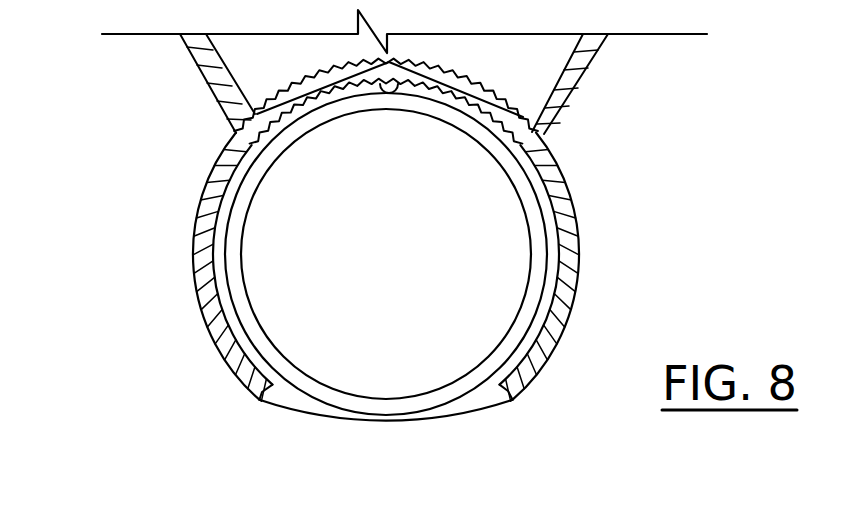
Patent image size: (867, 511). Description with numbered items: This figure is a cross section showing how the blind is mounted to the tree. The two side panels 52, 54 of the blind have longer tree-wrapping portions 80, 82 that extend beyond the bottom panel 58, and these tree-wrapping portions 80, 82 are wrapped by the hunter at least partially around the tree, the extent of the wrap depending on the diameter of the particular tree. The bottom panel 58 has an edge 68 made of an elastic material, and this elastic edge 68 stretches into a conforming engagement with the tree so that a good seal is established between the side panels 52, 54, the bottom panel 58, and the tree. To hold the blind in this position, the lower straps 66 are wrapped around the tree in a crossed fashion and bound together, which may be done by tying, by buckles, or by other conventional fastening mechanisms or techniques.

The side panel 52 is at (195, 60).
The side panel 54 is at (607, 45).
The bottom panel 58 is at (527, 60).
The lower straps 66 is at (231, 154).
The elastic edge 68 is at (507, 97).
The tree-wrapping portion 80 is at (189, 266).
The tree-wrapping portion 82 is at (578, 263).